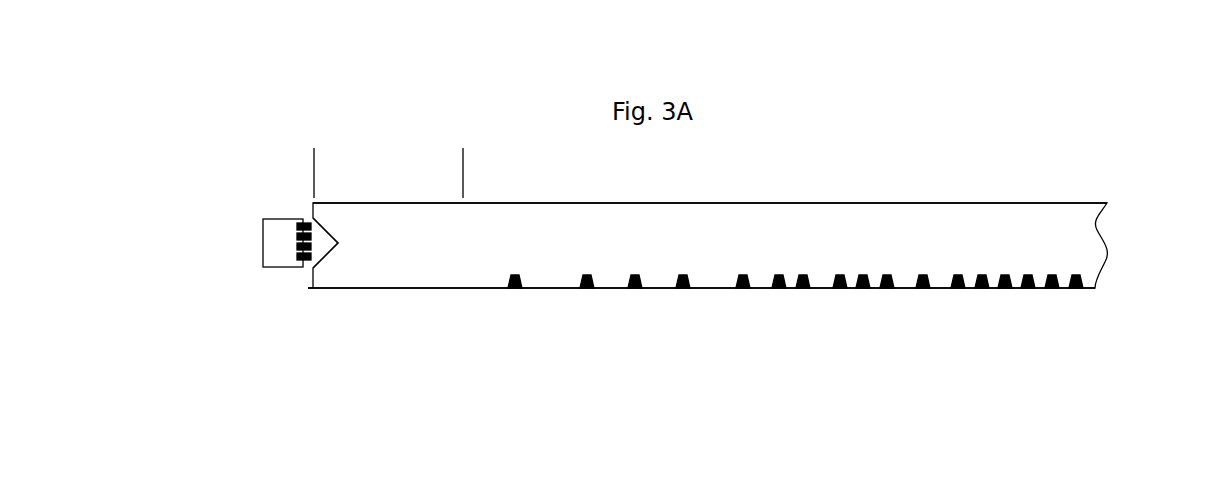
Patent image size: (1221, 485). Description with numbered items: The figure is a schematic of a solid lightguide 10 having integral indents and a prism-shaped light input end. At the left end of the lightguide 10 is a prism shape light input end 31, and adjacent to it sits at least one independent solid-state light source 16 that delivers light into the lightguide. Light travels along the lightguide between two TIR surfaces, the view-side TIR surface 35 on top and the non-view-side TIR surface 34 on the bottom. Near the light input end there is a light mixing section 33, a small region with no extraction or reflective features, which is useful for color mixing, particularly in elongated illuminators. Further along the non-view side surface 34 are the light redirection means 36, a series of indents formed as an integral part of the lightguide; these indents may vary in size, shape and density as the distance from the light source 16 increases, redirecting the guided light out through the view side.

The solid lightguide 10 is at (1011, 160).
The solid-state light source 16 is at (246, 271).
The prism shape light input end 31 is at (320, 254).
The light mixing section 33 is at (327, 176).
The non-view-side TIR surface 34 is at (429, 299).
The view-side TIR surface 35 is at (765, 190).
The light redirection means 36 is at (1040, 301).